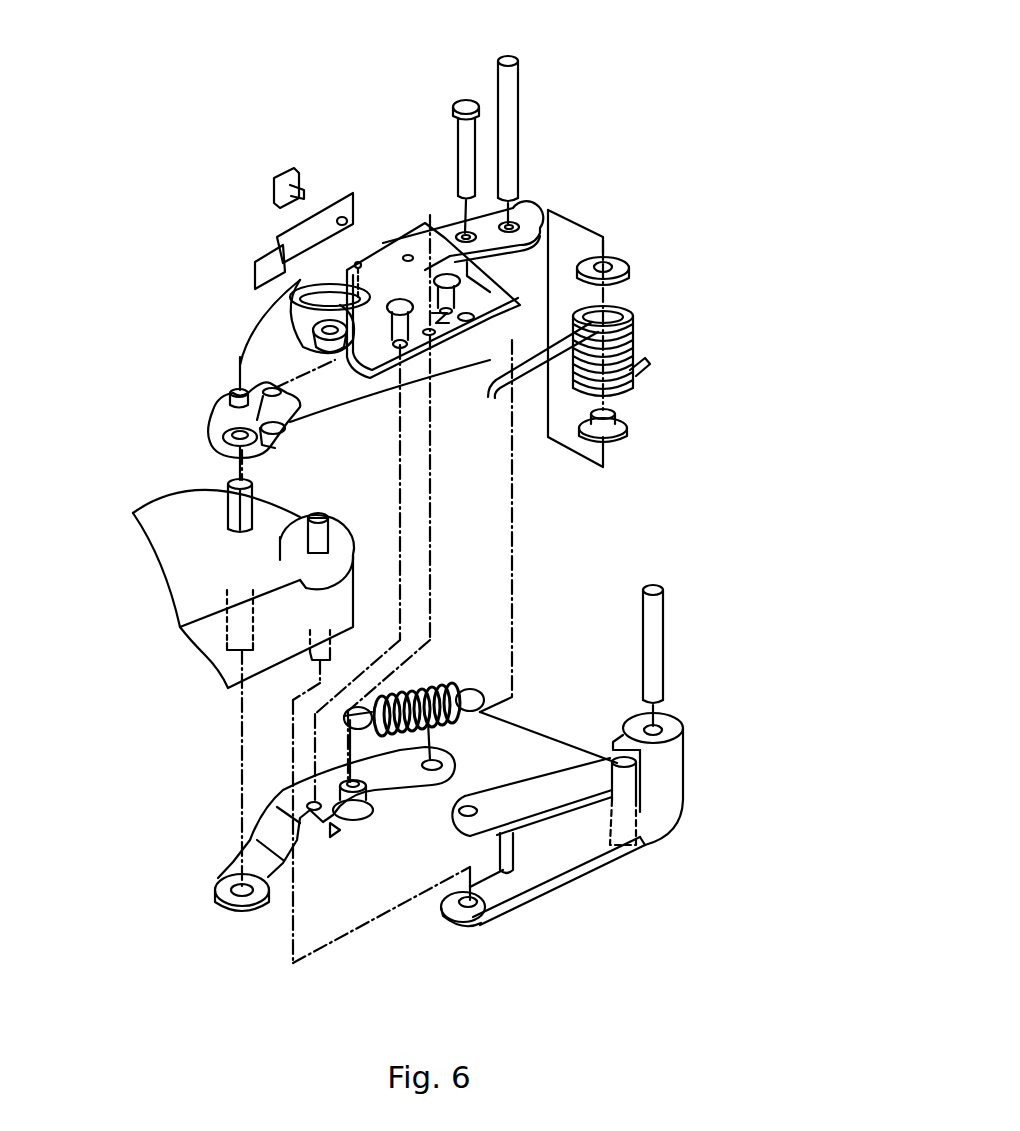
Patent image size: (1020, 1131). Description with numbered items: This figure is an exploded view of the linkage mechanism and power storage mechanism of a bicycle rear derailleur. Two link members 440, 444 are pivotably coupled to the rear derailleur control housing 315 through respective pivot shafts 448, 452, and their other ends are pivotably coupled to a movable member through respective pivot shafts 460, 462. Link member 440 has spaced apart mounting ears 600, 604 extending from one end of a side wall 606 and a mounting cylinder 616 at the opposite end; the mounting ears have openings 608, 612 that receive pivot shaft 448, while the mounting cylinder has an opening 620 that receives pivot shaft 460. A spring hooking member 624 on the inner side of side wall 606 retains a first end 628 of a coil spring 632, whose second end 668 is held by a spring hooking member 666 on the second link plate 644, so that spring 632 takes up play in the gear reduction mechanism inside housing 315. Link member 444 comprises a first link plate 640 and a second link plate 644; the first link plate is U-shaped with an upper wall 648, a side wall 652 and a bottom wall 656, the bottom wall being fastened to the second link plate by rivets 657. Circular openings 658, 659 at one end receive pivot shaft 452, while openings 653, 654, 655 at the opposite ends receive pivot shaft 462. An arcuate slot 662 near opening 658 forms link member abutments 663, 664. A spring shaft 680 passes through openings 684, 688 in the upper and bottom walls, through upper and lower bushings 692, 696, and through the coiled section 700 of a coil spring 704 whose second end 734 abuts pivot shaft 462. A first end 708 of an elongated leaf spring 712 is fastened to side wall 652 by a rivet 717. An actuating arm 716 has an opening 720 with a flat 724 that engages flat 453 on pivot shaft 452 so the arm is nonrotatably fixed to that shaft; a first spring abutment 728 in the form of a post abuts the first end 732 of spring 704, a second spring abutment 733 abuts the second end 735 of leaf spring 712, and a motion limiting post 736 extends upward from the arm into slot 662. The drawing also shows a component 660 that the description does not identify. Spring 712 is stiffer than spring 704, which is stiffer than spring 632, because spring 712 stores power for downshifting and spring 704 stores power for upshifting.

The rear derailleur control housing 315 is at (133, 513).
The link member 440 is at (551, 891).
The link member 444 is at (534, 180).
The pivot shaft 448 is at (333, 532).
The pivot shaft 452 is at (228, 514).
The flat 453 is at (253, 532).
The pivot shaft 460 is at (665, 606).
The pivot shaft 462 is at (510, 57).
The mounting ear 600 is at (480, 800).
The mounting ear 604 is at (478, 930).
The side wall 606 is at (563, 858).
The opening 608 is at (455, 813).
The opening 612 is at (450, 921).
The mounting cylinder 616 is at (672, 767).
The opening 620 is at (658, 726).
The spring hooking member 624 is at (610, 756).
The first end of coil spring 628 is at (472, 690).
The coil spring 632 is at (440, 684).
The first link plate 640 is at (421, 216).
The second link plate 644 is at (284, 792).
The upper wall 648 is at (520, 210).
The side wall 652 is at (405, 243).
The opening 653 is at (550, 213).
The opening 654 is at (602, 237).
The opening 655 is at (438, 764).
The bottom wall 656 is at (350, 375).
The rivets 657 is at (444, 273).
The circular opening 658 is at (310, 352).
The circular opening 659 is at (238, 884).
The rivet 660 is at (392, 298).
The arcuate slot 662 is at (288, 280).
The link member abutment 663 is at (258, 340).
The link member abutment 664 is at (322, 290).
The spring hooking member 666 is at (357, 808).
The second end of spring 668 is at (344, 716).
The spring shaft 680 is at (464, 99).
The opening 684 is at (458, 230).
The opening 688 is at (467, 322).
The upper bushing 692 is at (626, 262).
The lower bushing 696 is at (628, 432).
The coiled section 700 is at (630, 327).
The coil spring 704 is at (680, 385).
The first end of leaf spring 708 is at (345, 197).
The elongated leaf spring 712 is at (277, 238).
The actuating arm 716 is at (212, 418).
The rivet 717 is at (274, 186).
The opening 720 is at (223, 443).
The flat 724 is at (260, 450).
The first spring abutment 728 is at (274, 430).
The first end of spring 732 is at (488, 400).
The second spring abutment 733 is at (233, 368).
The second end of spring 734 is at (648, 363).
The second end of leaf spring 735 is at (254, 262).
The motion limiting post 736 is at (230, 397).